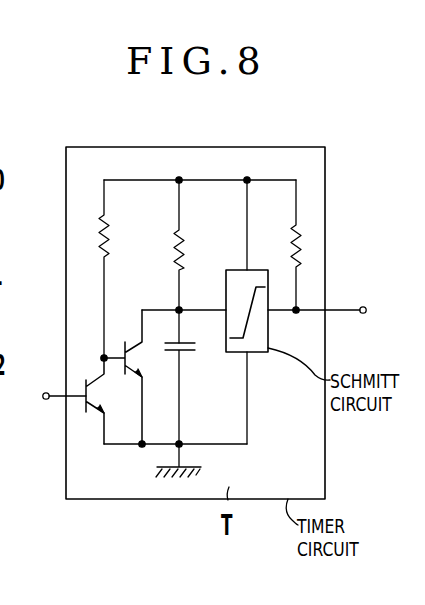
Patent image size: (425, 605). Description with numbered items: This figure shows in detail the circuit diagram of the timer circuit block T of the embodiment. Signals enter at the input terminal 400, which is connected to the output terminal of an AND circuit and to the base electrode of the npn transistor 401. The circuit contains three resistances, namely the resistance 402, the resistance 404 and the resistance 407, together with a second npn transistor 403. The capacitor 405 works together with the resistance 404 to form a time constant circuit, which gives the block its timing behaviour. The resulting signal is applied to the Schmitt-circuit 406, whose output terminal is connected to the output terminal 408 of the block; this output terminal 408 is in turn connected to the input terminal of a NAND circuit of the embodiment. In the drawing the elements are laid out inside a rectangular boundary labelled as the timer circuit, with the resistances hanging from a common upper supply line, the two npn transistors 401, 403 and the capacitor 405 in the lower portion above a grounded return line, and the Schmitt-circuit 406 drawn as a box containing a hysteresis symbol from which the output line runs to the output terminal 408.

The input terminal 400 is at (43, 399).
The npn transistor 401 is at (90, 392).
The resistance 402 is at (121, 269).
The npn transistor 403 is at (130, 364).
The resistance 404 is at (198, 261).
The capacitor 405 is at (195, 350).
The Schmitt-circuit 406 is at (258, 352).
The resistance 407 is at (299, 243).
The output terminal 408 is at (363, 313).